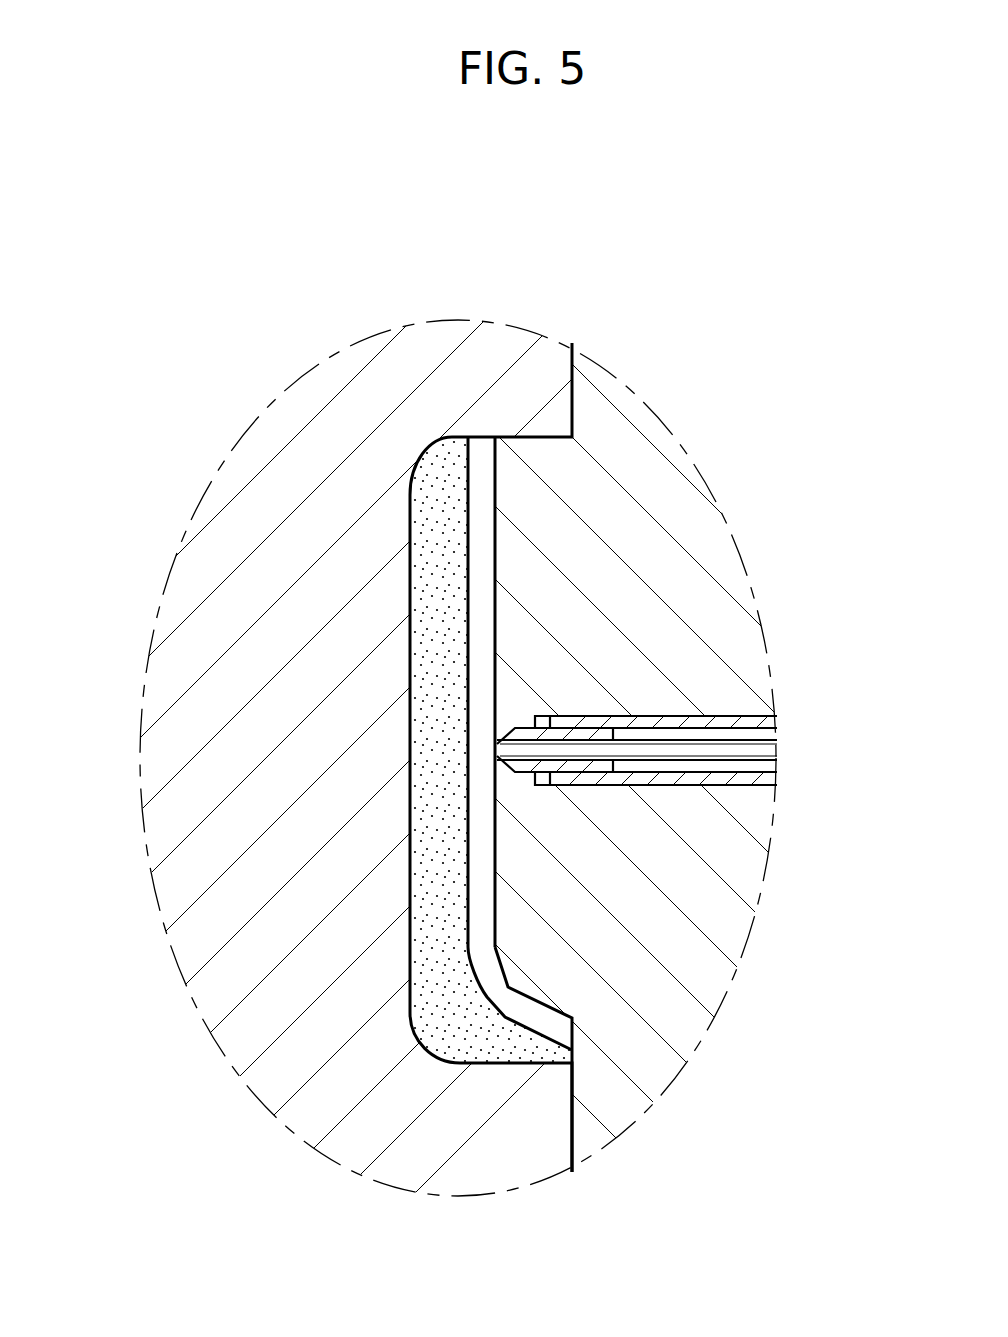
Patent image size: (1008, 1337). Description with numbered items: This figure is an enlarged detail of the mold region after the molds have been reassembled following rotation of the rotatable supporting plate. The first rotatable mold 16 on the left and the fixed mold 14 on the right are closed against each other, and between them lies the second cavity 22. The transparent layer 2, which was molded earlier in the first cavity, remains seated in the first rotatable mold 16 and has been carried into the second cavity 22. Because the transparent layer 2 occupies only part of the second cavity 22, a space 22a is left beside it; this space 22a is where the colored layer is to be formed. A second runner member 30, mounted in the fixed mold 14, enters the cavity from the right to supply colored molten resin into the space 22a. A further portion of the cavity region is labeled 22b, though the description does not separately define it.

The transparent layer 2 is at (437, 818).
The fixed mold 14 is at (733, 915).
The first rotatable mold 16 is at (267, 488).
The second cavity 22 is at (412, 493).
The space 22a is at (493, 527).
The gate portion of molding material 22b is at (533, 748).
The second runner member 30 is at (752, 714).